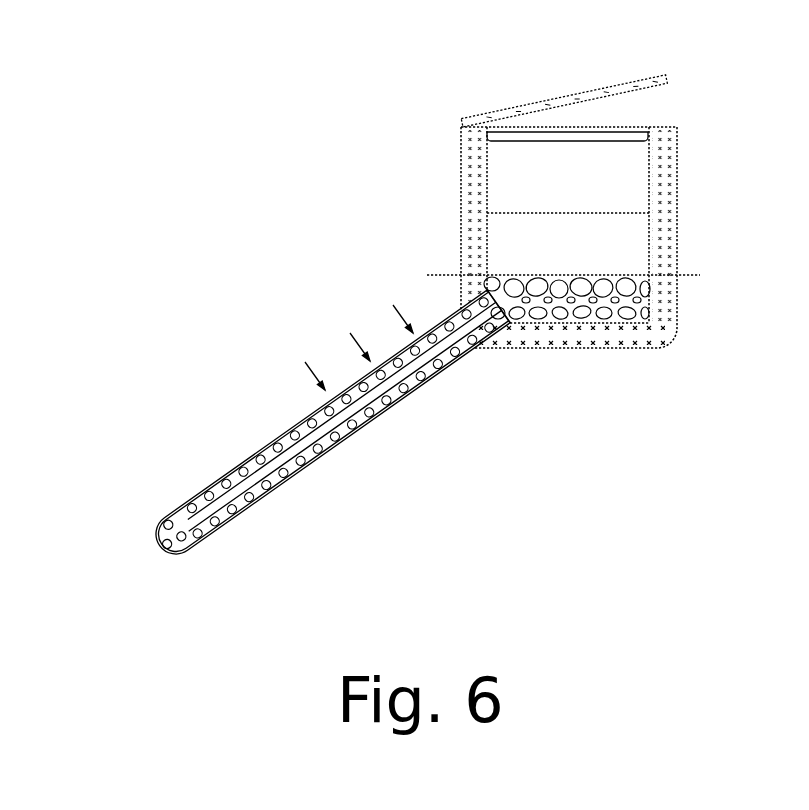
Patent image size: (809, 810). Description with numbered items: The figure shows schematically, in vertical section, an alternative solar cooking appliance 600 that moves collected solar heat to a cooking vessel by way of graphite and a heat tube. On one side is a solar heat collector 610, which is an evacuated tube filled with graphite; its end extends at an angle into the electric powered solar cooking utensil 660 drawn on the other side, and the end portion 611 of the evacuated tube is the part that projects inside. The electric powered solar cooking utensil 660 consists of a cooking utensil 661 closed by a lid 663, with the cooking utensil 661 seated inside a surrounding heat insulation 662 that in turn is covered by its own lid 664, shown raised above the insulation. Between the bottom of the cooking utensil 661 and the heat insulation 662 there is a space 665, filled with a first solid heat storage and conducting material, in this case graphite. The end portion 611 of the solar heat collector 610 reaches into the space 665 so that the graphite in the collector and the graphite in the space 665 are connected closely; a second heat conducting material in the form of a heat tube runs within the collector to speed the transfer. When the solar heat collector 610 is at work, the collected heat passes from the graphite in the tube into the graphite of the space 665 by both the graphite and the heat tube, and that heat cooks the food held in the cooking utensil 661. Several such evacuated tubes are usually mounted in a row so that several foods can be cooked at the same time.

The solar cooking appliance 600 is at (348, 198).
The solar heat collector 610 is at (431, 323).
The tube outlet end 611 is at (496, 306).
The electric powered solar cooking utensil 660 is at (698, 78).
The cooking utensil 661 is at (652, 170).
The heat insulation 662 is at (677, 197).
The lid 663 is at (615, 135).
The lid 664 is at (617, 86).
The space 665 is at (633, 300).